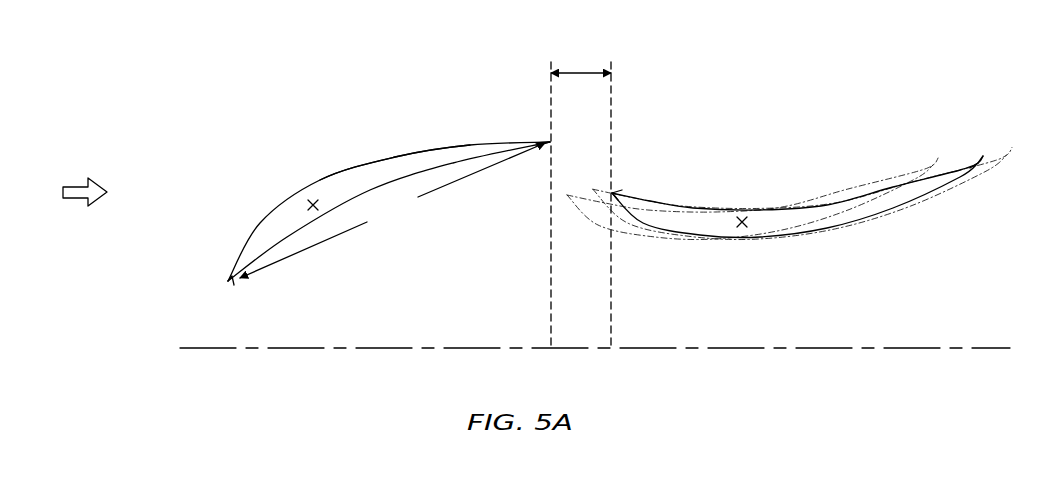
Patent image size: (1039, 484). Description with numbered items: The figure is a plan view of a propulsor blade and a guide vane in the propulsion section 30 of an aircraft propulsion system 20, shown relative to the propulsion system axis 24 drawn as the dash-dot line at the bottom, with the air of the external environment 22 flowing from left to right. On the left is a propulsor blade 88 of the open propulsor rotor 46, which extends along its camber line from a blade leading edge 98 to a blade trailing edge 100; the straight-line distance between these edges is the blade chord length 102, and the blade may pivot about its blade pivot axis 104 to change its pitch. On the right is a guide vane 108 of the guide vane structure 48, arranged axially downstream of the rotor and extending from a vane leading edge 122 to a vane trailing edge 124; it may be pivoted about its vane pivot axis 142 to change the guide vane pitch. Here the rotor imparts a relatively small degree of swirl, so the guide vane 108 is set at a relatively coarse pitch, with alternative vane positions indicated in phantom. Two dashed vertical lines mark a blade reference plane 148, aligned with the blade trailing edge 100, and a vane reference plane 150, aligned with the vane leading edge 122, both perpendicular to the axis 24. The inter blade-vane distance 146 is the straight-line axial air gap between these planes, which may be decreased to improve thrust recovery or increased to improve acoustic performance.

The aircraft propulsion system 20 is at (171, 101).
The propulsion section 30 is at (147, 77).
The external environment 22 is at (188, 188).
The propulsion system axis 24 is at (192, 350).
The propulsor rotor 46 is at (344, 167).
The guide vane structure 48 is at (775, 188).
The propulsor blade 88 is at (395, 157).
The blade leading edge 98 is at (227, 282).
The blade trailing edge 100 is at (550, 142).
The blade chord length 102 is at (392, 210).
The blade pivot axis 104 is at (310, 205).
The guide vane 108 is at (700, 223).
The vane leading edge 122 is at (612, 184).
The vane trailing edge 124 is at (979, 160).
The vane pivot axis 142 is at (742, 230).
The inter blade-vane distance 146 is at (573, 73).
The blade reference plane 148 is at (550, 318).
The vane reference plane 150 is at (612, 92).